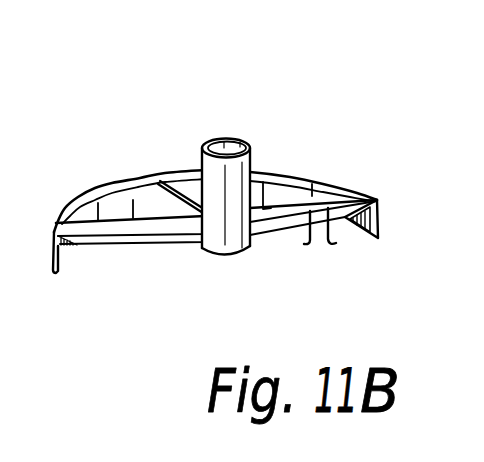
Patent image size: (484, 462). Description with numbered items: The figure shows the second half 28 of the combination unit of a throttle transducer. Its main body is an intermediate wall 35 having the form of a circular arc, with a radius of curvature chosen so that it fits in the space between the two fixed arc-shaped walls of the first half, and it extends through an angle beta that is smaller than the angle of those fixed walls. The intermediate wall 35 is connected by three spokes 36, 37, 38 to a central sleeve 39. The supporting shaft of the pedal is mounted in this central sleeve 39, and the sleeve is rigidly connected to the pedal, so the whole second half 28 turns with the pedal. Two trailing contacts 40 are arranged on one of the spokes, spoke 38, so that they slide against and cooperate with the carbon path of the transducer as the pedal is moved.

The second half 28 is at (210, 234).
The intermediate wall 35 is at (117, 206).
The spoke 36 is at (136, 229).
The spoke 37 is at (186, 183).
The spoke 38 is at (328, 207).
The central sleeve 39 is at (223, 238).
The trailing contacts 40 is at (315, 244).